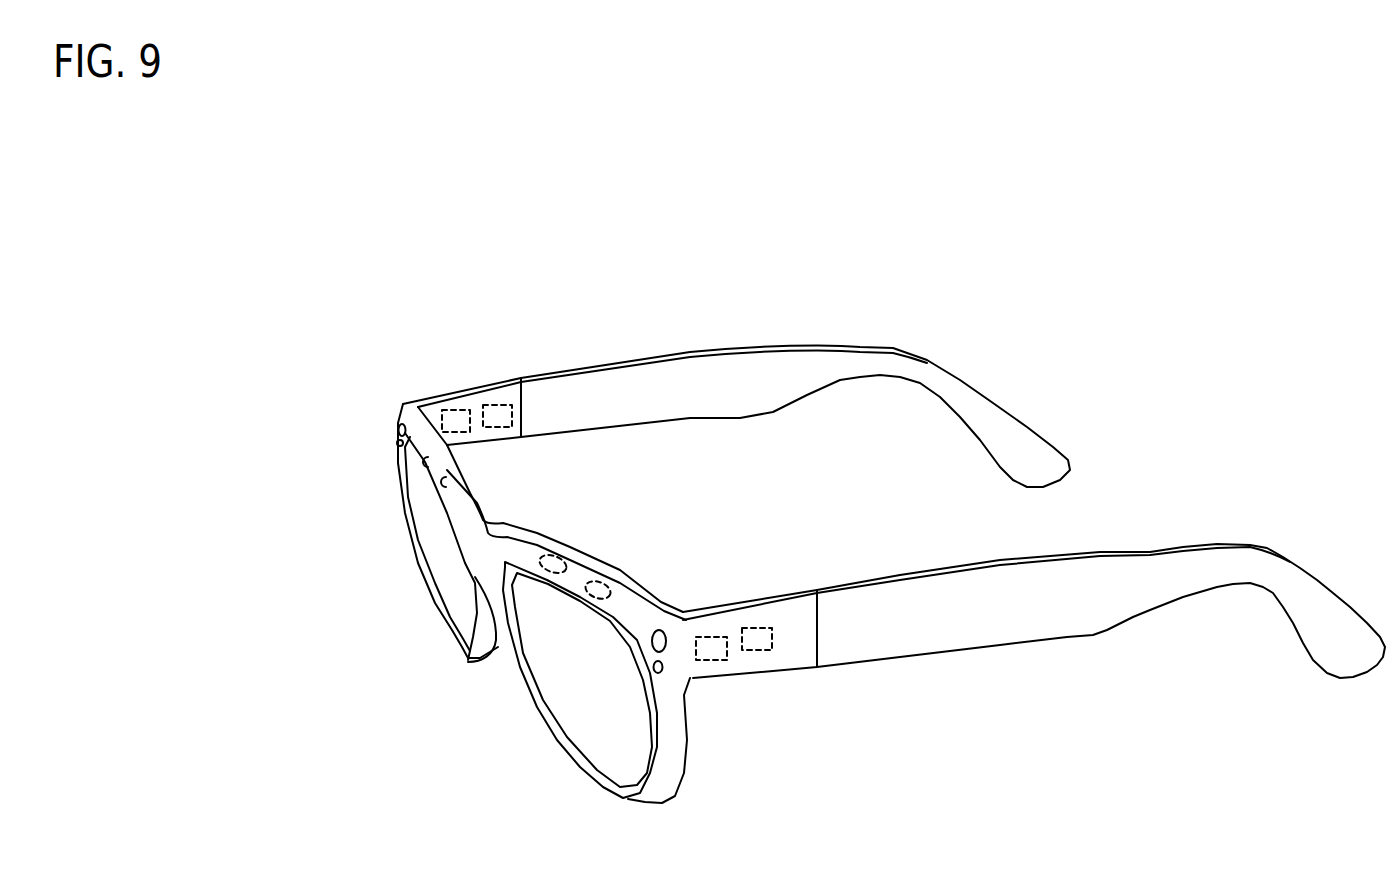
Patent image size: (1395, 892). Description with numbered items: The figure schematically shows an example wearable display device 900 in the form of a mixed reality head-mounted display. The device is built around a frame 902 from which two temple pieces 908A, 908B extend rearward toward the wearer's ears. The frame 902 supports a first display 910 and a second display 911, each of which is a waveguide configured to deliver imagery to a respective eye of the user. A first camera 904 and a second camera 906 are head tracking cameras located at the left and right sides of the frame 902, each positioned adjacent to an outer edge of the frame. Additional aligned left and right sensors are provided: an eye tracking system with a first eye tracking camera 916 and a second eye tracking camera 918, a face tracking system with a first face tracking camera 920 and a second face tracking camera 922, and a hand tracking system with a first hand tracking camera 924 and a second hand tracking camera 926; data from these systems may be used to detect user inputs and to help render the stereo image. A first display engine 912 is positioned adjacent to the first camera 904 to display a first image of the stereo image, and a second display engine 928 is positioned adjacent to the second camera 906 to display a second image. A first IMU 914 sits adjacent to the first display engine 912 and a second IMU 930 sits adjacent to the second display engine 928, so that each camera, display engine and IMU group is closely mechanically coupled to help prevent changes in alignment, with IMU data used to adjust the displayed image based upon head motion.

The wearable display device 900 is at (193, 311).
The frame 902 is at (528, 685).
The first camera 904 is at (660, 628).
The second camera 906 is at (400, 423).
The temple piece 908A is at (683, 406).
The temple piece 908B is at (953, 627).
The first display 910 is at (590, 755).
The second display 911 is at (448, 627).
The first display engine 912 is at (714, 660).
The first IMU 914 is at (763, 651).
The first eye tracking camera 916 is at (603, 582).
The second eye tracking camera 918 is at (431, 462).
The first face tracking camera 920 is at (553, 553).
The second face tracking camera 922 is at (449, 481).
The first hand tracking camera 924 is at (664, 670).
The second hand tracking camera 926 is at (396, 443).
The second display engine 928 is at (448, 407).
The second IMU 930 is at (500, 403).